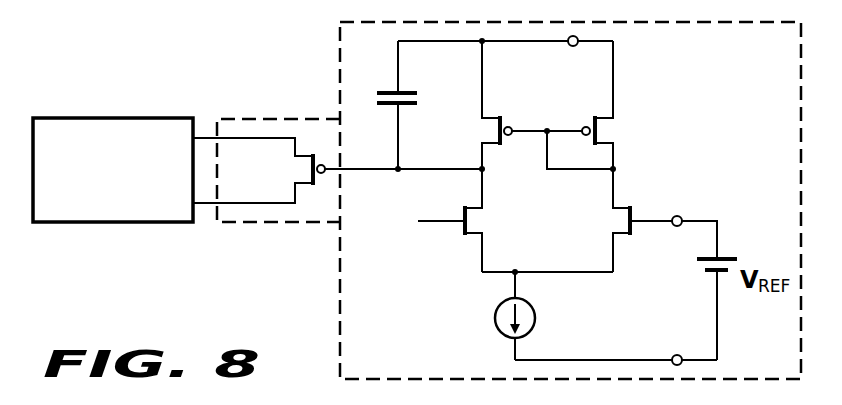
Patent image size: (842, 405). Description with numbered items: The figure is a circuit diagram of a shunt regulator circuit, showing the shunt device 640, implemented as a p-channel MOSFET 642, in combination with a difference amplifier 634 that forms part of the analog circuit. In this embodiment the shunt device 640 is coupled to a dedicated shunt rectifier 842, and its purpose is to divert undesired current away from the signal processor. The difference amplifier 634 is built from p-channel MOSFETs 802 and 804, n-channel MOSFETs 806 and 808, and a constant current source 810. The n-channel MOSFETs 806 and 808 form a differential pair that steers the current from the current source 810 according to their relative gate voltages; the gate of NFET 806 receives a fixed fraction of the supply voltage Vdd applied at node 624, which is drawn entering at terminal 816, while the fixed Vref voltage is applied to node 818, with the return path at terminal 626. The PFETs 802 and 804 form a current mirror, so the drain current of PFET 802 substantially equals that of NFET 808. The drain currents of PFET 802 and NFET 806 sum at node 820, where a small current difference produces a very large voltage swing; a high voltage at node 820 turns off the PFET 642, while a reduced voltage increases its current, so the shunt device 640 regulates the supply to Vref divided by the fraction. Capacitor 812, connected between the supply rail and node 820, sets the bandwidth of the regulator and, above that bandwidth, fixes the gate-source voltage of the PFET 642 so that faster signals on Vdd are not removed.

The shunt rectifier 842 is at (118, 117).
The shunt device 640 is at (271, 117).
The p-channel MOSFET 642 is at (295, 170).
The difference amplifier 634 is at (339, 313).
The capacitor 812 is at (381, 93).
The node 820 is at (398, 174).
The p-channel MOSFET 802 is at (480, 131).
The p-channel MOSFET 804 is at (615, 131).
The node 624 is at (573, 47).
The n-channel MOSFET 806 is at (485, 221).
The n-channel MOSFET 808 is at (612, 222).
The input 816 is at (432, 224).
The node 818 is at (677, 213).
The constant current source 810 is at (494, 323).
The ground terminal 626 is at (677, 354).